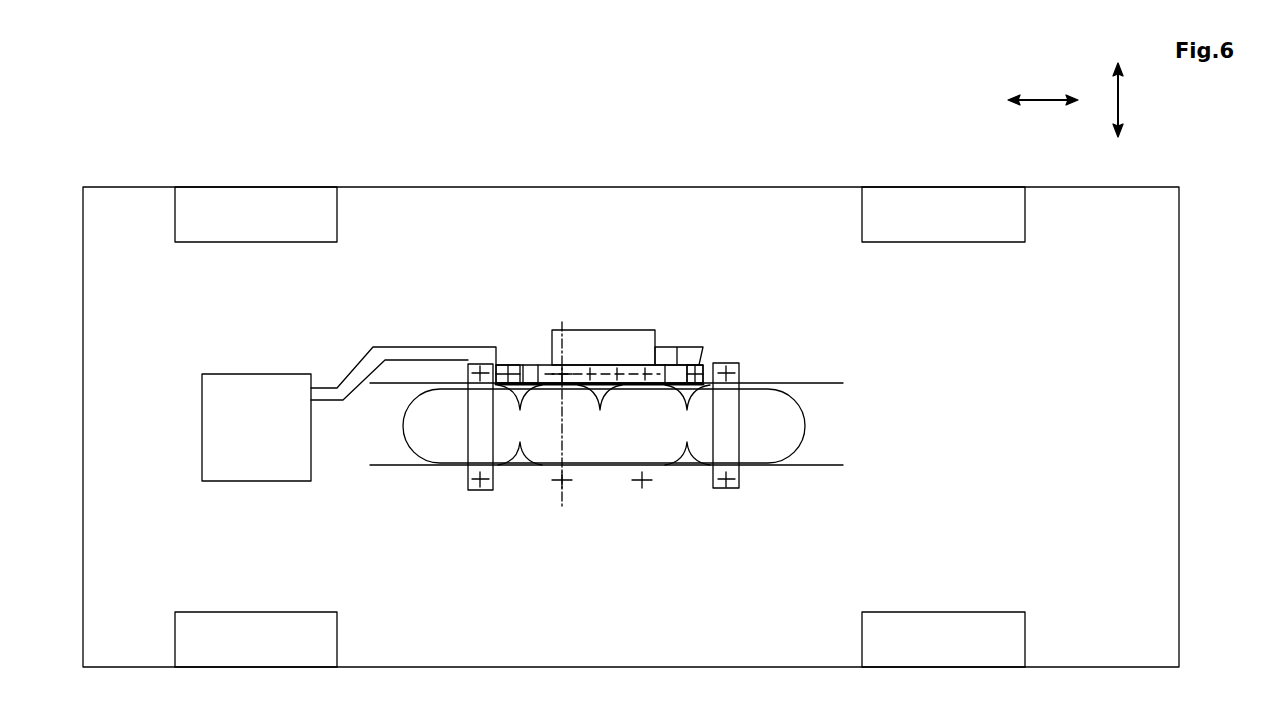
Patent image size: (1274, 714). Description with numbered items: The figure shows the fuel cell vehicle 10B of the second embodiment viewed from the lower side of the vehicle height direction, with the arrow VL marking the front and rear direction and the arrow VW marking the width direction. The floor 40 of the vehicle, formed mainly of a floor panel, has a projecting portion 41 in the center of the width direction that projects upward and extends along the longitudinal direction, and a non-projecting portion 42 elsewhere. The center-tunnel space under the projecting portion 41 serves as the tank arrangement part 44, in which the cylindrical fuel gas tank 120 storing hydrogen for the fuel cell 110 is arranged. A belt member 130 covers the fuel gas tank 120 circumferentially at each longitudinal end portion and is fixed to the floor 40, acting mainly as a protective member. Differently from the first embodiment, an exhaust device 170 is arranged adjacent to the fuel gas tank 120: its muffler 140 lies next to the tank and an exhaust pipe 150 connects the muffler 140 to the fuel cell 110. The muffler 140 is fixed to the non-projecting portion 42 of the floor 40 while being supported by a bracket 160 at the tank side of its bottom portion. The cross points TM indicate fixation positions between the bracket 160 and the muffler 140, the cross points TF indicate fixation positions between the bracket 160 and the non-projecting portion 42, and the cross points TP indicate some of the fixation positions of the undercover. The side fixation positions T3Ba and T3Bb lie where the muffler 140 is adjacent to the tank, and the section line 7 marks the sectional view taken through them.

The fuel cell vehicle 10B is at (166, 142).
The floor 40 is at (836, 138).
The projecting portion 41 is at (812, 397).
The non-projecting portion 42 is at (776, 215).
The tank arrangement part 44 is at (832, 408).
The fuel cell 110 is at (256, 427).
The fuel gas tank 120 is at (675, 467).
The belt member 130 is at (474, 491).
The muffler 140 is at (617, 330).
The exhaust pipe 150 is at (413, 347).
The bracket 160 is at (677, 347).
The exhaust device 170 is at (700, 274).
The section line 7- 7 is at (562, 505).
The fixation positions of bracket and floor TF is at (506, 366).
The side fixation position T3Ba is at (560, 481).
The side fixation position T3Bb is at (557, 374).
The fixation positions of undercover TP is at (604, 425).
The fixation positions of bracket and muffler TM is at (600, 412).
The front and rear direction VL is at (1043, 85).
The width direction VW is at (1138, 100).